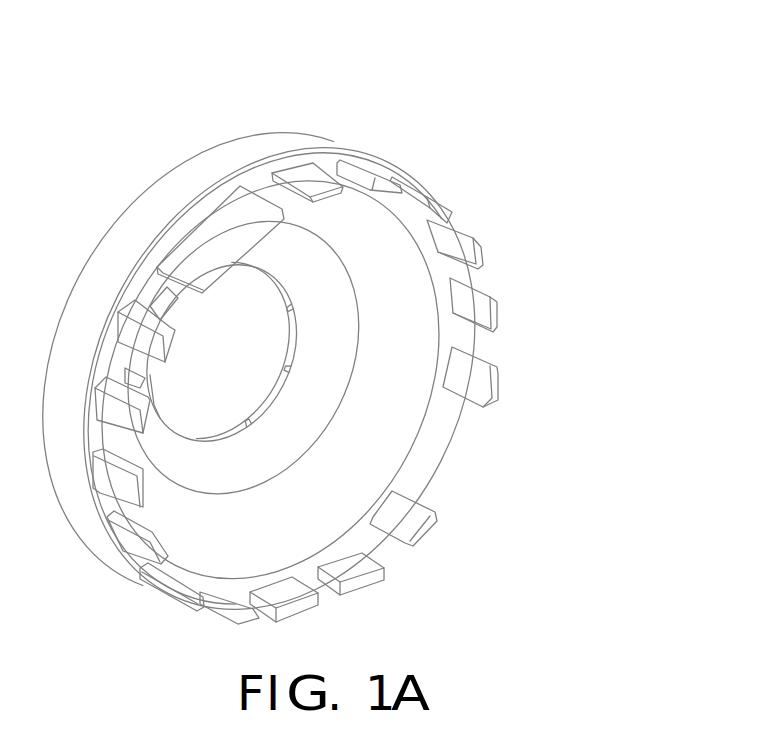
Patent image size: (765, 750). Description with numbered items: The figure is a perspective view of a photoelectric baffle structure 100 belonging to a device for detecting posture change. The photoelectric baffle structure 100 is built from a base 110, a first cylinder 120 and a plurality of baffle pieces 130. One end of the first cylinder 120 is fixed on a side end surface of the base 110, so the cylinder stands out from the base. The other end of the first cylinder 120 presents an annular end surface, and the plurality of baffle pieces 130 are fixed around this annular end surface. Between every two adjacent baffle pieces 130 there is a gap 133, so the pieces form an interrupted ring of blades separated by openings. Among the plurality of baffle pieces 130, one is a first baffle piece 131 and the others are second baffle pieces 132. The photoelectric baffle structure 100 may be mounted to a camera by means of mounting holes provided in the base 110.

The photoelectric baffle structure 100 is at (518, 176).
The base 110 is at (279, 369).
The first cylinder 120 is at (270, 380).
The baffle pieces 130 is at (405, 57).
The first baffle piece 131 is at (271, 314).
The second baffle pieces 132 is at (238, 345).
The gap 133 is at (485, 375).